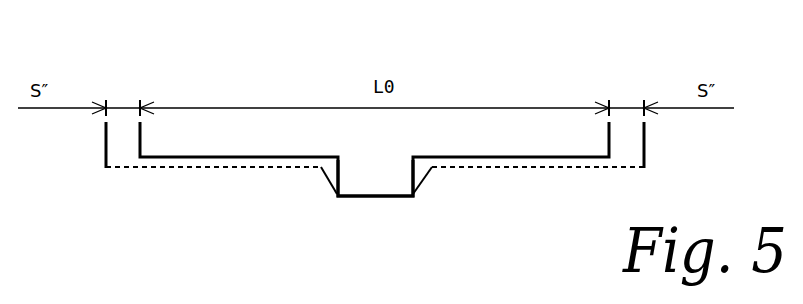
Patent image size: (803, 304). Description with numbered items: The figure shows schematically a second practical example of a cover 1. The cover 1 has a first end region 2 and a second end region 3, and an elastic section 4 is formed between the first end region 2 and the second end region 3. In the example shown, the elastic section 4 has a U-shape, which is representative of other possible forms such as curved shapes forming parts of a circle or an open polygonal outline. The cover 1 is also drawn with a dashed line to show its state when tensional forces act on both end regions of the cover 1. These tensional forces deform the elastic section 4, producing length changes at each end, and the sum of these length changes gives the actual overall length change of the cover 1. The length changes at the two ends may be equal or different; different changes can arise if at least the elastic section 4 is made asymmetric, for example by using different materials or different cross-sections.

The cover 1 is at (534, 85).
The first end region 2 is at (144, 184).
The second end region 3 is at (555, 190).
The elastic section 4 is at (348, 215).